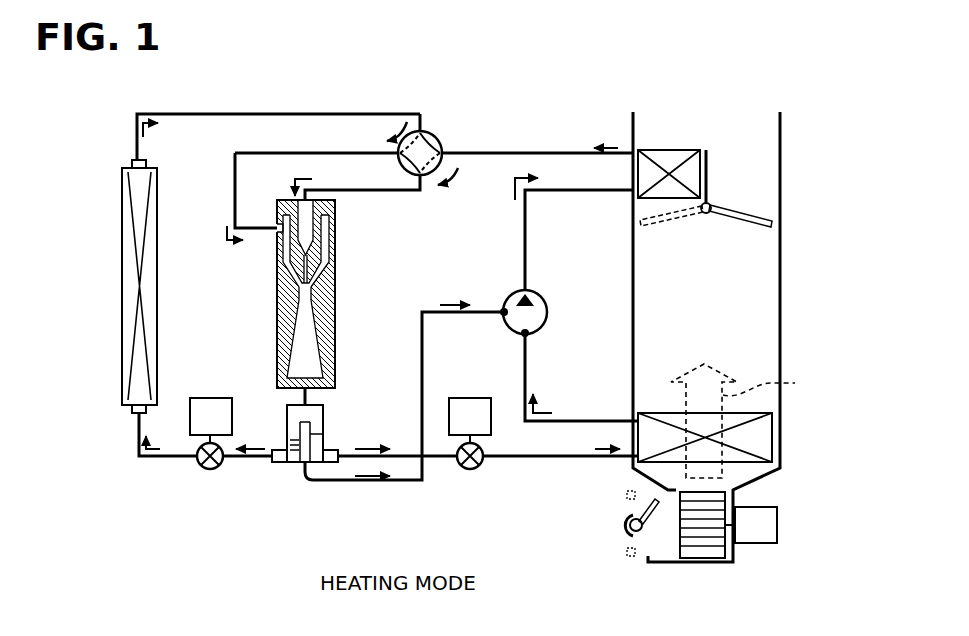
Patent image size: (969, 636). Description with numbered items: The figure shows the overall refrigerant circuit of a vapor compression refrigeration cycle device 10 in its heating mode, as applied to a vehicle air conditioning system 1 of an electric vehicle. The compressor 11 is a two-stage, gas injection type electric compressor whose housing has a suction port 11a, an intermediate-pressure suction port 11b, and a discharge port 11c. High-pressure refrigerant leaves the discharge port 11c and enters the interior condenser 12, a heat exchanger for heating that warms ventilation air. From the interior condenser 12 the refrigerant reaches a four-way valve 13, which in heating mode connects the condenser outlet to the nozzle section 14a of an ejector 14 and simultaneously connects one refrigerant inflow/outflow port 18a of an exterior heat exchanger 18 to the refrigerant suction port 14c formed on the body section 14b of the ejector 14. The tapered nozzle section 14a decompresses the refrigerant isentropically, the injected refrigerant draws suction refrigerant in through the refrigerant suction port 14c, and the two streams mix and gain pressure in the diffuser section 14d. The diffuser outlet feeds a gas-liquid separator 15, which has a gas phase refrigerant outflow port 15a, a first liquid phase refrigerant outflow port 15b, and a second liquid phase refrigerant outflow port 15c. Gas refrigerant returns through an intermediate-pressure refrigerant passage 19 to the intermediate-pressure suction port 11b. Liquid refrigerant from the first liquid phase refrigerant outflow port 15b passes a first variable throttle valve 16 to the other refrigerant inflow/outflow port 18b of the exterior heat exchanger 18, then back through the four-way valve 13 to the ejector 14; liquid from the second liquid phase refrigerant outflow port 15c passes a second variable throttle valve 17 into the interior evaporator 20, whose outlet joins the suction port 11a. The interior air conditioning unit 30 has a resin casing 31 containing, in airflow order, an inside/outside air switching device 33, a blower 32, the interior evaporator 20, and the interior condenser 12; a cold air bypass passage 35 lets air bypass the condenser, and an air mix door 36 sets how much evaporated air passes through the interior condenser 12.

The vehicle air conditioning system 1 is at (541, 93).
The refrigeration cycle device 10 is at (384, 109).
The compressor 11 is at (539, 299).
The suction port 11a is at (542, 332).
The intermediate-pressure suction port 11b is at (503, 310).
The discharge port 11c is at (531, 290).
The interior condenser 12 is at (630, 197).
The four-way valve 13 is at (432, 135).
The ejector 14 is at (304, 270).
The nozzle section 14a is at (313, 248).
The body section 14b is at (336, 318).
The refrigerant suction port 14c is at (278, 240).
The diffuser section 14d is at (307, 350).
The gas-liquid separator 15 is at (328, 459).
The gas phase refrigerant outflow port 15a is at (337, 482).
The first liquid phase refrigerant outflow port 15b is at (272, 463).
The second liquid phase refrigerant outflow port 15c is at (338, 452).
The first variable throttle valve 16 is at (198, 467).
The second variable throttle valve 17 is at (481, 467).
The exterior heat exchanger 18 is at (112, 286).
The one refrigerant inflow/outflow port 18a is at (130, 160).
The other refrigerant inflow/outflow port 18b is at (132, 413).
The intermediate-pressure refrigerant passage 19 is at (422, 357).
The interior evaporator 20 is at (775, 447).
The interior air conditioning unit 30 is at (785, 138).
The casing 31 is at (702, 563).
The blower 32 is at (755, 547).
The inside/outside air switching device 33 is at (648, 563).
The cold air bypass passage 35 is at (732, 185).
The air mix door 36 is at (778, 227).